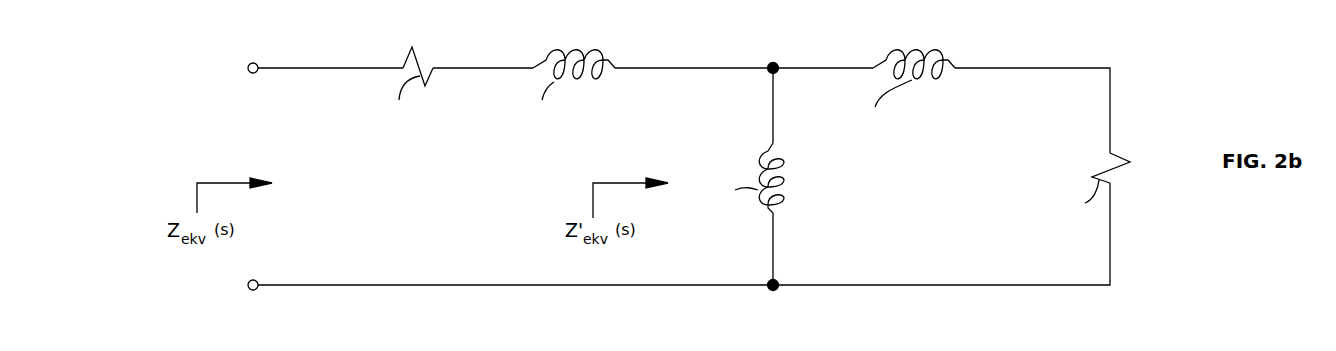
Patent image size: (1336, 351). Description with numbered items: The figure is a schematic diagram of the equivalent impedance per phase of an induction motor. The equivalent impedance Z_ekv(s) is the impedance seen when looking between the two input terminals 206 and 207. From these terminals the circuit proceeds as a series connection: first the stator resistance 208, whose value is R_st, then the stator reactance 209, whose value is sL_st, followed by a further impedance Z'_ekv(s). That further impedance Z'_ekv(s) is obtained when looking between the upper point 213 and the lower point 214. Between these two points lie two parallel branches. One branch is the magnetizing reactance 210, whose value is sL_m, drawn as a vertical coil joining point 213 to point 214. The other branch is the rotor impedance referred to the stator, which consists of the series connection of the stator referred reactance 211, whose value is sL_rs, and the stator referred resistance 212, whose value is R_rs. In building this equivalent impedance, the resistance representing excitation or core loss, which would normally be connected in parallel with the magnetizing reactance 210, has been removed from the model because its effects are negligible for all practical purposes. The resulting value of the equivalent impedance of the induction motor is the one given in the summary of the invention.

The terminal 206 is at (255, 62).
The terminal 207 is at (252, 292).
The stator resistance 208 is at (411, 48).
The stator reactance 209 is at (547, 50).
The magnetizing reactance 210 is at (790, 188).
The stator referred reactance 211 is at (901, 50).
The stator referred resistance 212 is at (1120, 158).
The point 213 is at (771, 62).
The point 214 is at (771, 292).